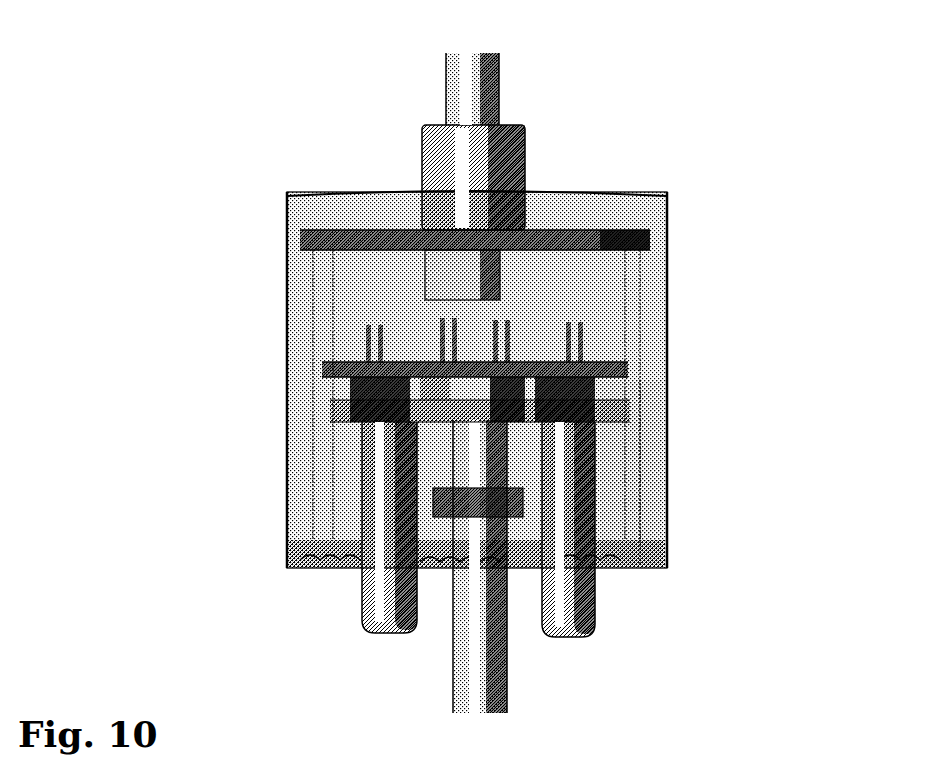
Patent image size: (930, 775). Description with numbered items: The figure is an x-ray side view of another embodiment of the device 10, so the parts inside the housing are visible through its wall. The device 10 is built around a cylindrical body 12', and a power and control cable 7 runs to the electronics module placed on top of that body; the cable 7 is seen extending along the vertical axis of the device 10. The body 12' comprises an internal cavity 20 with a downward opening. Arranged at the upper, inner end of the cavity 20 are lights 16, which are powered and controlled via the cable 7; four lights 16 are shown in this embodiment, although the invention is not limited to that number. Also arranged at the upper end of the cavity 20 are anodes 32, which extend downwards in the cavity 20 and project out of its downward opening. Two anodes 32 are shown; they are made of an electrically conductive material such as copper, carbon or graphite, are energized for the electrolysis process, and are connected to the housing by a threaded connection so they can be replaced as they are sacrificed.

The device 10 is at (303, 109).
The power and control cable 7 is at (505, 84).
The cylindrical body 12' is at (411, 379).
The lights 16 is at (352, 395).
The internal cavity 20 is at (640, 495).
The anodes 32 is at (352, 589).